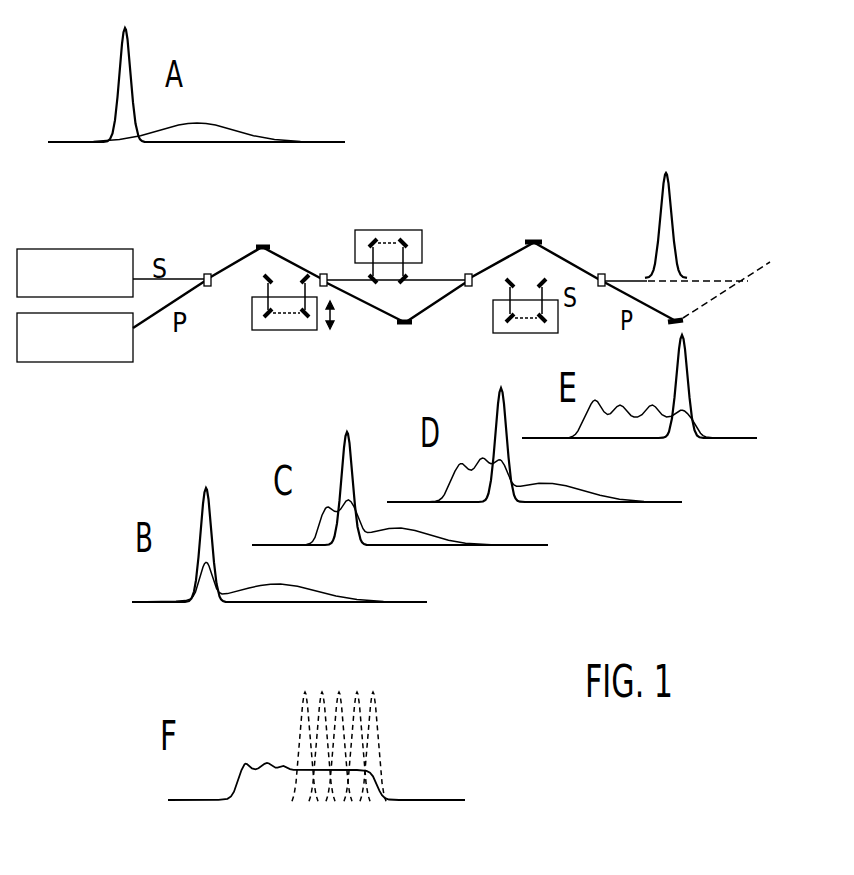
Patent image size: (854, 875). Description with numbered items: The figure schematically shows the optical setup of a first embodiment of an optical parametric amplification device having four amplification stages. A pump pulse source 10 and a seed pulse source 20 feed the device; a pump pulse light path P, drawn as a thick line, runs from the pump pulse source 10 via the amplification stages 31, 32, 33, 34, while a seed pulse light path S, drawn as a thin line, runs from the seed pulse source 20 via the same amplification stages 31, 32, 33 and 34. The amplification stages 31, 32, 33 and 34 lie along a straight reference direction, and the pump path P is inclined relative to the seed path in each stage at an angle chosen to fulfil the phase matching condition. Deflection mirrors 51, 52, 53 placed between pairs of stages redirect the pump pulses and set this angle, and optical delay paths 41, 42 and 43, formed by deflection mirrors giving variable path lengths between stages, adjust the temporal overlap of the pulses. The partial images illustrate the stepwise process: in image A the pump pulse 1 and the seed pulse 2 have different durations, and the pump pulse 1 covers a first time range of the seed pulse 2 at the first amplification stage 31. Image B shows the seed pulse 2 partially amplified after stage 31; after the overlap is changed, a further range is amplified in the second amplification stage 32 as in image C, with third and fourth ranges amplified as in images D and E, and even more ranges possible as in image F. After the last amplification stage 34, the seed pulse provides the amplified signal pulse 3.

The pump pulse 1 is at (118, 92).
The seed pulse 2 is at (155, 133).
The amplified signal pulse 3 is at (653, 258).
The pump pulse source 10 is at (85, 260).
The seed pulse source 20 is at (85, 350).
The first amplification stage 31 is at (204, 277).
The second amplification stage 32 is at (320, 277).
The third amplification stage 33 is at (464, 277).
The fourth amplification stage 34 is at (597, 272).
The optical delay path 41 is at (267, 322).
The optical delay path 42 is at (383, 237).
The optical delay path 43 is at (520, 324).
The deflection mirror 51 is at (258, 245).
The deflection mirror 52 is at (400, 320).
The deflection mirror 53 is at (520, 240).